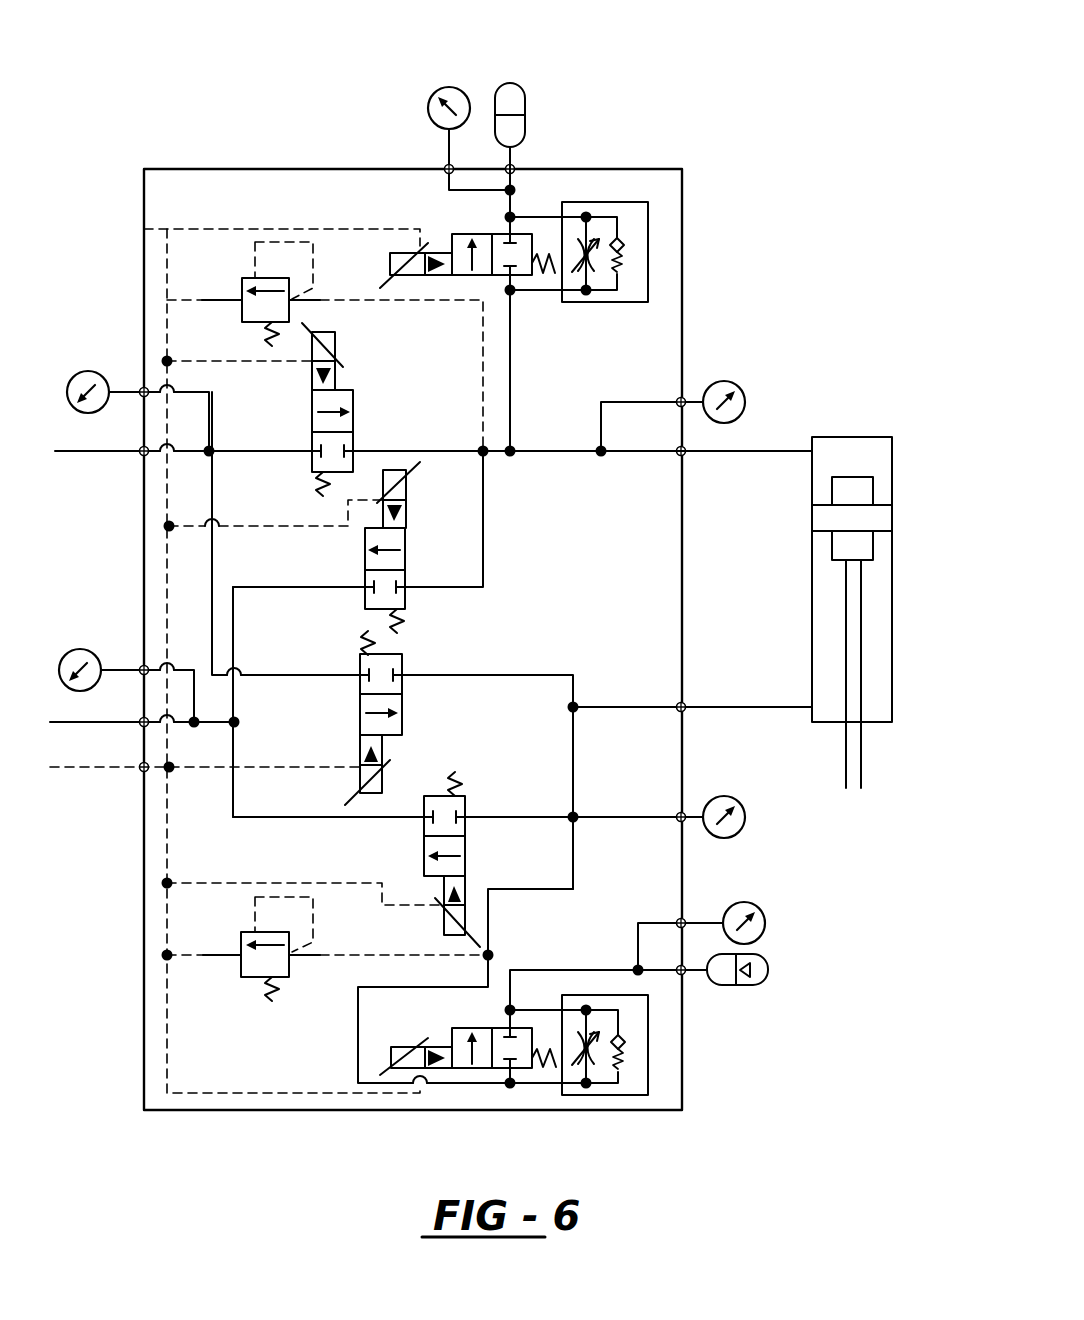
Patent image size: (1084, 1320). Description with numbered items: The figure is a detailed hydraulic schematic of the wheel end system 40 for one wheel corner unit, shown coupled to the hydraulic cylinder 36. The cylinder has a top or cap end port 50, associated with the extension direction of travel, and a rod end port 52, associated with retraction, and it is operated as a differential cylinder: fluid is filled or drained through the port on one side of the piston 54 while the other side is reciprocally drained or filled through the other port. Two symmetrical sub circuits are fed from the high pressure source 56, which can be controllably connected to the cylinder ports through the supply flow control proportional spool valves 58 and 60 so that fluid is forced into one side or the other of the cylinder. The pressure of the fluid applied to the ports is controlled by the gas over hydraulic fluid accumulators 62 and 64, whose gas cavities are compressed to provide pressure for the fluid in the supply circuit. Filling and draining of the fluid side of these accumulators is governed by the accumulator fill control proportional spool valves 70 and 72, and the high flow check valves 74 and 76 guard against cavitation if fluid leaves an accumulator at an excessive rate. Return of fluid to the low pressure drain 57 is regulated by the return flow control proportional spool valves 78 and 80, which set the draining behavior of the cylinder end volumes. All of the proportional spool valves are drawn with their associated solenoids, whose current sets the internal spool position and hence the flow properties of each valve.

The hydraulic cylinder 36 is at (892, 573).
The wheel end system 40 is at (684, 86).
The cap end port 50 is at (812, 448).
The rod end port 52 is at (808, 710).
The piston 54 is at (892, 518).
The high pressure source 56 is at (93, 452).
The low pressure source (drain) 57 is at (62, 722).
The supply flow control proportional spool valve 58 is at (353, 410).
The supply flow control proportional spool valve 60 is at (402, 660).
The gas over hydraulic fluid accumulator 62 is at (510, 82).
The gas over hydraulic fluid accumulator 64 is at (768, 970).
The accumulator fill control proportional spool valve 70 is at (578, 244).
The accumulator fill control proportional spool valve 72 is at (587, 1068).
The high flow check valve 74 is at (624, 233).
The high flow check valve 76 is at (624, 1053).
The return flow control proportional spool valve 78 is at (405, 540).
The return flow control proportional spool valve 80 is at (465, 848).